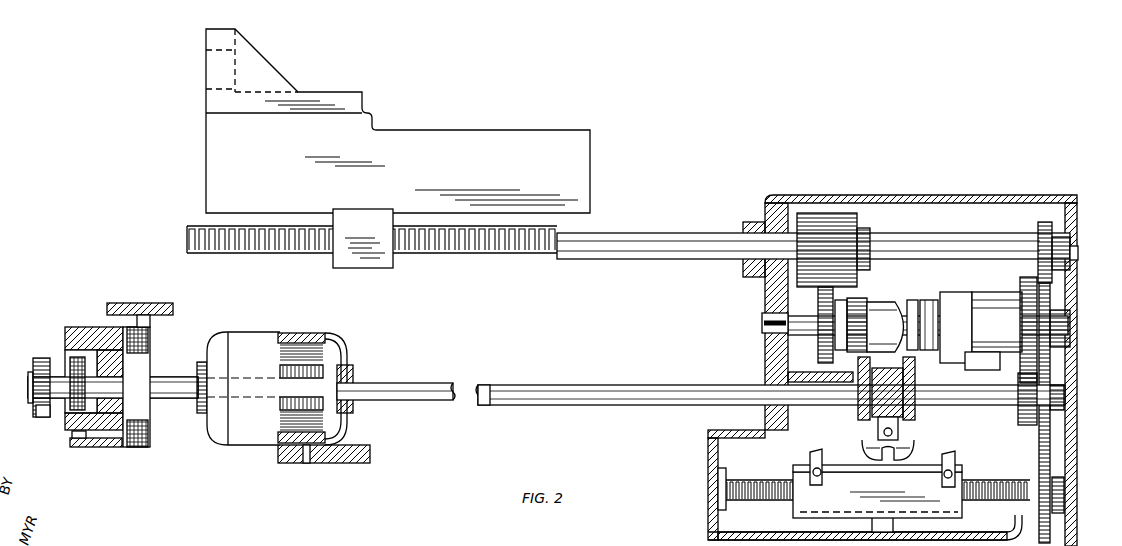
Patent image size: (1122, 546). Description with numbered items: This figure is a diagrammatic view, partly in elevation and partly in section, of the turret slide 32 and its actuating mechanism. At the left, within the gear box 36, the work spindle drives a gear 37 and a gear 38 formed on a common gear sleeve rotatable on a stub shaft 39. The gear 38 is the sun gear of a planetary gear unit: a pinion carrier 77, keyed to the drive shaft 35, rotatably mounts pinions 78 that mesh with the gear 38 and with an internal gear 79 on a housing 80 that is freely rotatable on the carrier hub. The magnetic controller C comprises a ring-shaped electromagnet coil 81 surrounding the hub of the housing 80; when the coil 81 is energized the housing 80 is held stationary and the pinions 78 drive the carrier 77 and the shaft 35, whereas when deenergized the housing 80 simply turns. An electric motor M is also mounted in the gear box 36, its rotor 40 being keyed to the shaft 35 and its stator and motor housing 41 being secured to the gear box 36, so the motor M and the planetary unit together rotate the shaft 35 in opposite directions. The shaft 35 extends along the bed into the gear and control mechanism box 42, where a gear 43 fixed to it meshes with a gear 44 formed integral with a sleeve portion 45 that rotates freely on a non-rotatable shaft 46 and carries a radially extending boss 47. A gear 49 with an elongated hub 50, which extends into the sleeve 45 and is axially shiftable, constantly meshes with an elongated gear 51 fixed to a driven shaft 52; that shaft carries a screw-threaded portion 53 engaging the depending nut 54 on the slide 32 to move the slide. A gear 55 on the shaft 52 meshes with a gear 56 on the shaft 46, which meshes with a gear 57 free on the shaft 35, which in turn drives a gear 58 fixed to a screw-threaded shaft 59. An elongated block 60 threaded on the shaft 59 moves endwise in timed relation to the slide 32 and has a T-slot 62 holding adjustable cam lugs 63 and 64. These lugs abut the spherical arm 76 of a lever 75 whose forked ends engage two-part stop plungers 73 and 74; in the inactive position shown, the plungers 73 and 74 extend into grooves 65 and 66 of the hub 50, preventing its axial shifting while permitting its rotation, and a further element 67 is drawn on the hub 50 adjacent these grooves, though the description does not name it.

The turret slide 32 is at (490, 137).
The screw-threaded portion 53 is at (524, 229).
The depending nut 54 is at (352, 270).
The gear and control mechanism box 42 is at (1025, 197).
The driven shaft 52 is at (944, 237).
The elongated gear 51 is at (827, 216).
The gear 44 is at (1020, 336).
The gear 49 is at (818, 357).
The elongated hub 50 is at (858, 300).
The groove 65 is at (905, 330).
The groove 66 is at (911, 300).
The collar 67 is at (932, 300).
The radially extending boss 47 is at (966, 368).
The sleeve portion 45 is at (988, 302).
The gear 55 is at (1037, 232).
The gear 56 is at (1052, 298).
The non-rotatable shaft 46 is at (1072, 327).
The gear 43 is at (1020, 423).
The gear 57 is at (1058, 430).
The gear 58 is at (1040, 512).
The two-part stop plunger 73 is at (860, 413).
The two-part stop plunger 74 is at (912, 409).
The lever 75 is at (900, 450).
The laterally extending arm 76 is at (875, 452).
The screw-threaded shaft 59 is at (990, 484).
The elongated block 60 is at (805, 500).
The T-slot 62 is at (867, 472).
The cam lug 63 is at (812, 457).
The cam lug 64 is at (952, 459).
The magnetic controller C is at (122, 325).
The pinion 78 is at (67, 337).
The pinion carrier 77 is at (90, 447).
The internal gear 79 is at (72, 435).
The housing 80 is at (132, 447).
The electromagnet coil 81 is at (148, 340).
The gear box 36 is at (148, 303).
The gear 38 is at (70, 362).
The stub shaft 39 is at (31, 384).
The gear 37 is at (44, 418).
The electric motor M is at (267, 338).
The rotor 40 is at (331, 373).
The stator and motor housing 41 is at (272, 445).
The drive shaft 35 is at (425, 389).